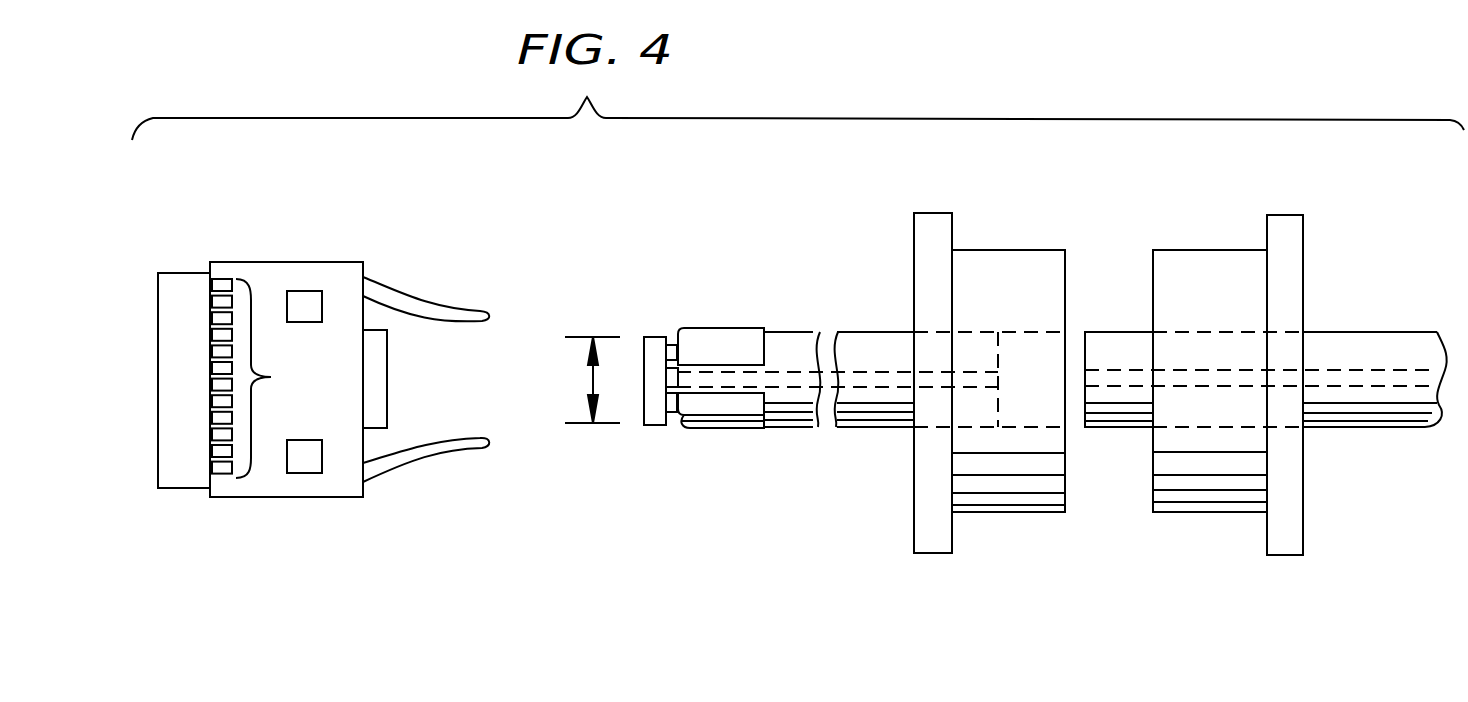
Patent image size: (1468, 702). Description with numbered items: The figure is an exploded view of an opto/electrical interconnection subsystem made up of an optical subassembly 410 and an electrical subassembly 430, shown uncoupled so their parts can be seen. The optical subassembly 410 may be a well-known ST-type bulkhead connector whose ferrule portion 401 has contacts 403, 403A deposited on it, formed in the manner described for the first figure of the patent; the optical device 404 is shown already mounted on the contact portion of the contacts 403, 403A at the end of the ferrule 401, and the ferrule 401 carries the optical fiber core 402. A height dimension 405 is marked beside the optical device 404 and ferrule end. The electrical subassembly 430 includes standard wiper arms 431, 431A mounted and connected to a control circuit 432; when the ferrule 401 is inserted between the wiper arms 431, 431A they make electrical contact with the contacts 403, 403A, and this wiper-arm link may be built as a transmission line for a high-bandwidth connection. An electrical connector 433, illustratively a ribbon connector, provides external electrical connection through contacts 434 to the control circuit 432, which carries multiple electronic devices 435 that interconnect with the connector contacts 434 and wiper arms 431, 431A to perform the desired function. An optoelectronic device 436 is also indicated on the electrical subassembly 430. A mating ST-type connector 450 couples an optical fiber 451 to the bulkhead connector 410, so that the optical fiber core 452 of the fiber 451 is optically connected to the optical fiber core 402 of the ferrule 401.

The ferrule portion 401 is at (870, 330).
The optical fiber core 402 is at (790, 380).
The contact 403 is at (712, 335).
The contact 403A is at (708, 422).
The optical device 404 is at (651, 337).
The height dimension 405 is at (591, 380).
The optical subassembly 410 is at (972, 165).
The electrical subassembly 430 is at (318, 167).
The wiper arm 431 is at (440, 308).
The wiper arm 431A is at (445, 447).
The control circuit 432 is at (263, 262).
The electrical connector 433 is at (172, 482).
The contacts 434 is at (267, 378).
The electronic devices 435 is at (305, 298).
The optoelectronic device 436 is at (377, 333).
The mating ST-type connector 450 is at (1283, 215).
The optical fiber 451 is at (1380, 340).
The optical fiber core 452 is at (1375, 380).